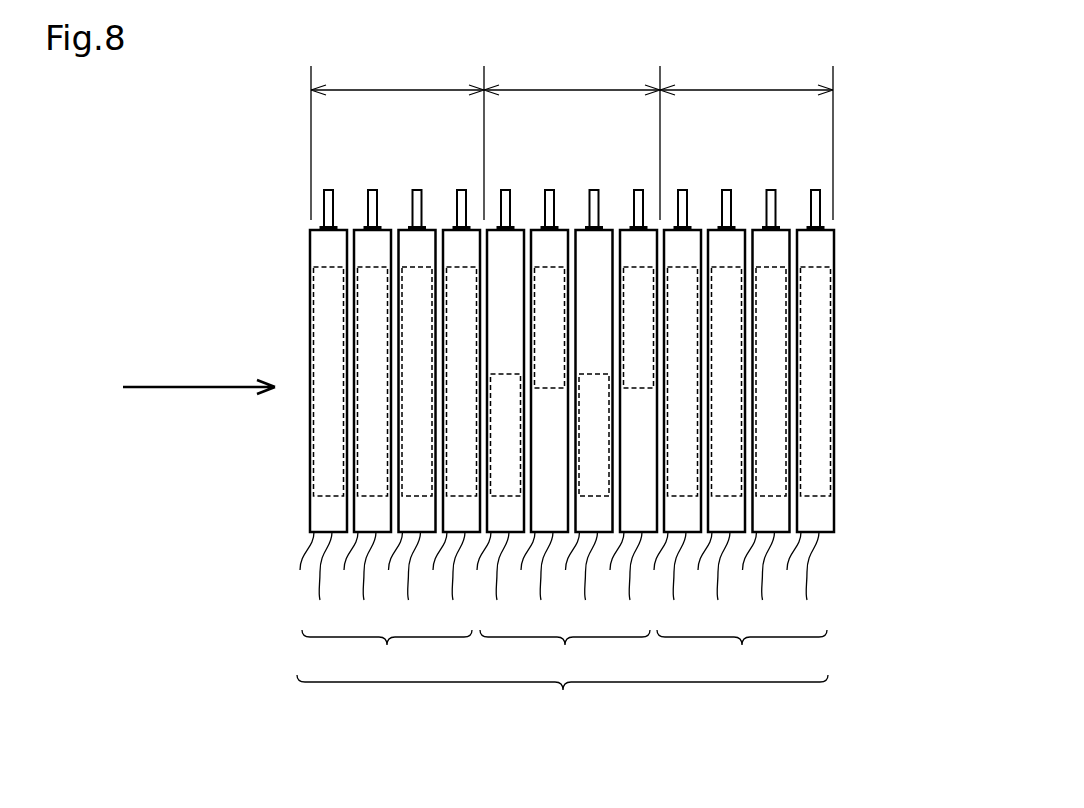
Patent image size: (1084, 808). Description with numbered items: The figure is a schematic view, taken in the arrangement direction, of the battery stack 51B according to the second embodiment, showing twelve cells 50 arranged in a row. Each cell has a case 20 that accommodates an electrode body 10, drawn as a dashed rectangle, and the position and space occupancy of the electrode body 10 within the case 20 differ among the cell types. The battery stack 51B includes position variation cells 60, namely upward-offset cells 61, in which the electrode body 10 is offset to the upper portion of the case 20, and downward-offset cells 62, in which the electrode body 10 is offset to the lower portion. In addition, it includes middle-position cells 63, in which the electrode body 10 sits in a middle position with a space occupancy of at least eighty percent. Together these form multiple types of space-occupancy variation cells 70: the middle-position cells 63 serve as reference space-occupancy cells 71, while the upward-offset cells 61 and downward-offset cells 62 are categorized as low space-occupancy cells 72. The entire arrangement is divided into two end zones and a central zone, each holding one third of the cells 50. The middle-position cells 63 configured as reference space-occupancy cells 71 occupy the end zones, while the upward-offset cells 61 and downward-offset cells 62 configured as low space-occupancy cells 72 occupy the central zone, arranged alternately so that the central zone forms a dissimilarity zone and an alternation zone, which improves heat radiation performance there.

The electrode body 10 is at (326, 266).
The case 20 is at (551, 566).
The cell 50 is at (572, 456).
The battery stack 51B is at (212, 135).
The position variation cell 60 is at (562, 682).
The upward-offset cell 61 is at (591, 431).
The downward-offset cell 62 is at (546, 431).
The middle-position cell 63 is at (568, 431).
The space-occupancy variation cell 70 is at (562, 682).
The reference space-occupancy cell 71 is at (564, 655).
The low space-occupancy cell 72 is at (565, 655).